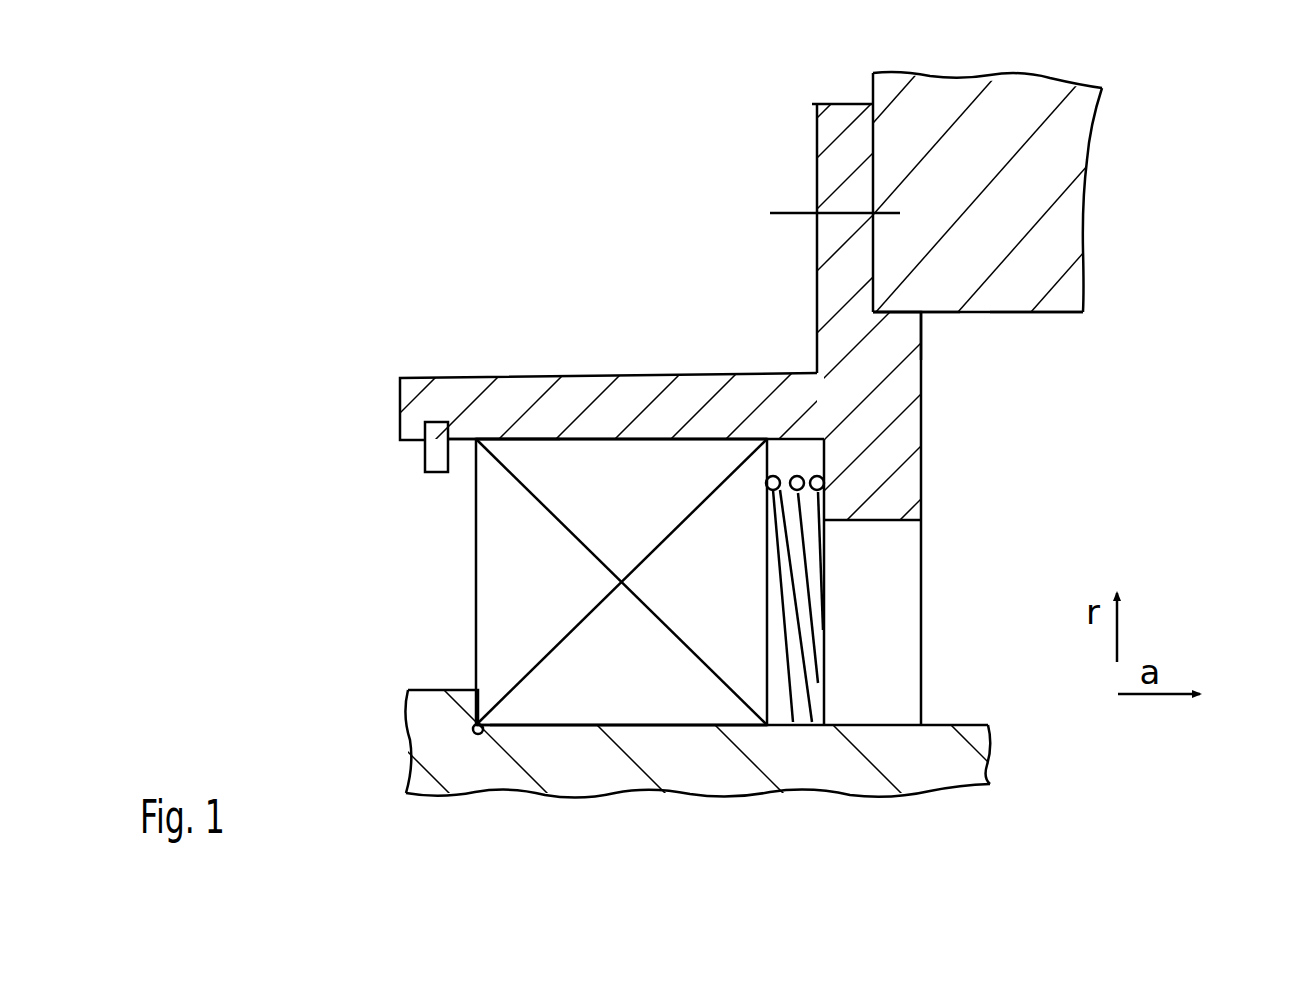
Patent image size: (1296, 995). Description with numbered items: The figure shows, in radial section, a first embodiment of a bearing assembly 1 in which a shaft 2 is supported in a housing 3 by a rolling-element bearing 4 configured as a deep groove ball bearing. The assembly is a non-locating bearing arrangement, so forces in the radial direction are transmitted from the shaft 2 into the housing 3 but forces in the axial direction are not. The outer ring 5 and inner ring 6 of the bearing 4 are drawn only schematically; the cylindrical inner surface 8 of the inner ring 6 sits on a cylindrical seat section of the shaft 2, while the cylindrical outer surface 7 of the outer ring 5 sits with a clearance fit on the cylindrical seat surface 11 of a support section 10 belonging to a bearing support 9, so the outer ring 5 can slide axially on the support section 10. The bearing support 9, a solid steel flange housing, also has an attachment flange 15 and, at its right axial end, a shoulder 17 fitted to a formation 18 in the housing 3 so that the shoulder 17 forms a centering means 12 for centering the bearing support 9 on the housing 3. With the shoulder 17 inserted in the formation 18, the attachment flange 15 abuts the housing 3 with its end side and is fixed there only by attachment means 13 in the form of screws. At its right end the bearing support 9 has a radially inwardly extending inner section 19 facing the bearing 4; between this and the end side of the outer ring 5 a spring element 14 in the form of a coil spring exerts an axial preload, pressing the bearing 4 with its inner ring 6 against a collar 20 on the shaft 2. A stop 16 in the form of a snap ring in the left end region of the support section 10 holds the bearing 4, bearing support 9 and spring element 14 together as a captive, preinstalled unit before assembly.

The bearing assembly 1 is at (378, 173).
The shaft 2 is at (942, 768).
The housing 3 is at (1062, 145).
The rolling-element bearing 4 is at (597, 662).
The outer ring 5 is at (560, 455).
The inner ring 6 is at (690, 708).
The cylindrical outer surface 7 is at (612, 430).
The cylindrical inner surface 8 is at (667, 729).
The bearing support 9 is at (903, 413).
The support section 10 is at (655, 385).
The cylindrical seat surface 11 is at (677, 443).
The centering means 12 is at (940, 321).
The attachment means 13 is at (793, 212).
The spring element 14 is at (806, 493).
The attachment flange 15 is at (842, 127).
The stop 16 is at (437, 453).
The shoulder 17 is at (901, 313).
The formation 18 is at (1020, 316).
The inner section 19 is at (900, 480).
The collar 20 is at (462, 702).